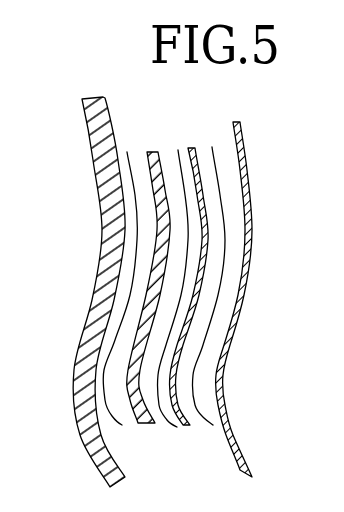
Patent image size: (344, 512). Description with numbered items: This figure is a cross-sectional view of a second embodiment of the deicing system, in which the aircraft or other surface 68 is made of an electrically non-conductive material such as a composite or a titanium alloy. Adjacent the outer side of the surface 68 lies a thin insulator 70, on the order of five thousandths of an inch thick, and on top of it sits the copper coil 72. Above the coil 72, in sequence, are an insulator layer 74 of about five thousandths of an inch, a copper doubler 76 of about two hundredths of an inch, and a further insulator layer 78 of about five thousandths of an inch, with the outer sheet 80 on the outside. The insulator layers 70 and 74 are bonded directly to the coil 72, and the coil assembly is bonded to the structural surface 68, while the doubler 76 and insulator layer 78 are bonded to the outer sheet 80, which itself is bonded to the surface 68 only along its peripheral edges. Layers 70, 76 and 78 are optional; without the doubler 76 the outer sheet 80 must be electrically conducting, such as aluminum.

The aircraft surface 68 is at (92, 138).
The insulator 70 is at (127, 152).
The copper coil 72 is at (148, 426).
The insulator layer 74 is at (178, 150).
The copper doubler 76 is at (190, 426).
The insulator layer 78 is at (216, 158).
The outer sheet 80 is at (249, 178).